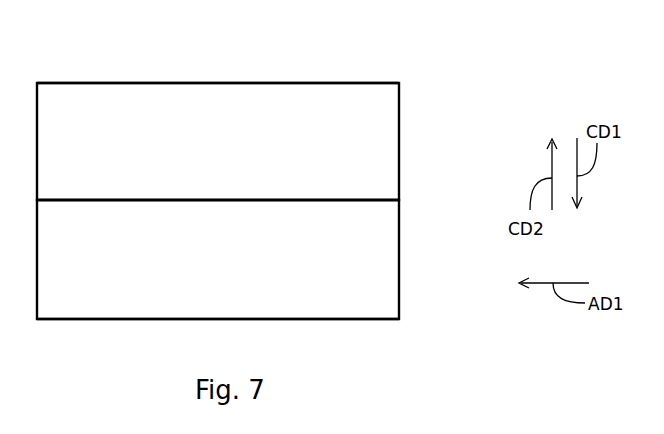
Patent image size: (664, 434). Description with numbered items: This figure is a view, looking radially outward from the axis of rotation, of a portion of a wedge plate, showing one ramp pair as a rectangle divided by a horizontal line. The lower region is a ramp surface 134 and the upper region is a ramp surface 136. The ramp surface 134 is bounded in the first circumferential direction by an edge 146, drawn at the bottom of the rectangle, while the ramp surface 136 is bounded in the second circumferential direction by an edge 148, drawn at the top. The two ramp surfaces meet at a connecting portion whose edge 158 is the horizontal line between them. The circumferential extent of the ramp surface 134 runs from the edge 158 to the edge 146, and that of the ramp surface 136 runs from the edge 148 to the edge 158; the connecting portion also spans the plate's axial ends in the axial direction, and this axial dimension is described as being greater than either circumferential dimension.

The ramp surface 134 is at (275, 280).
The ramp surface 136 is at (276, 124).
The edge 146 is at (135, 320).
The edge 148 is at (185, 82).
The edge 158 is at (364, 199).